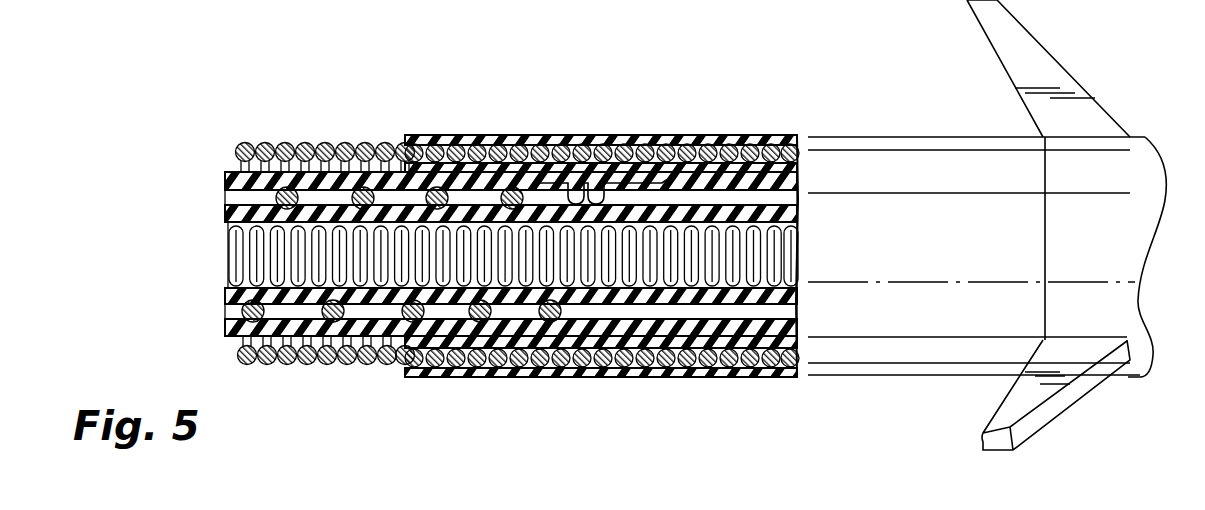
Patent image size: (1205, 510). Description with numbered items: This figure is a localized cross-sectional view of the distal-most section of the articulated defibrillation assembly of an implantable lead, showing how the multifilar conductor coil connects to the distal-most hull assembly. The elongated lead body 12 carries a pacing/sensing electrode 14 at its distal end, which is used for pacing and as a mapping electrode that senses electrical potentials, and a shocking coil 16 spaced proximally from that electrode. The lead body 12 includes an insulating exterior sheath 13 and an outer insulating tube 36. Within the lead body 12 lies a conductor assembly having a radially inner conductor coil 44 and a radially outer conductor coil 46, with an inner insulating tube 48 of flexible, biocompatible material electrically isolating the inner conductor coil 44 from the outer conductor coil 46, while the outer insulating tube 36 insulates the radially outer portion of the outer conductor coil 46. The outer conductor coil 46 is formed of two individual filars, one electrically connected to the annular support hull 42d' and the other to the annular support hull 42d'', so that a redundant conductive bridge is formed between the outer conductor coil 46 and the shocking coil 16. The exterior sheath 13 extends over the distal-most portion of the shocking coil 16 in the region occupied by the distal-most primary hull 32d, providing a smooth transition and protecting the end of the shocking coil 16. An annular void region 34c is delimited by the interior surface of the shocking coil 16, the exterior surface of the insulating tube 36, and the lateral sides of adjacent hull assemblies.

The lead body 12 is at (933, 135).
The exterior sheath 13 is at (767, 137).
The pacing/sensing electrode 14 is at (1133, 157).
The shocking coil 16 is at (343, 148).
The distal-most primary hull 32d is at (633, 173).
The annular void region 34c is at (237, 165).
The outer insulating tube 36 is at (223, 184).
The annular support hull 42d' is at (498, 386).
The annular support hull 42d'' is at (696, 385).
The inner conductor coil 44 is at (228, 263).
The outer conductor coil 46 is at (463, 180).
The inner insulating tube 48 is at (228, 297).